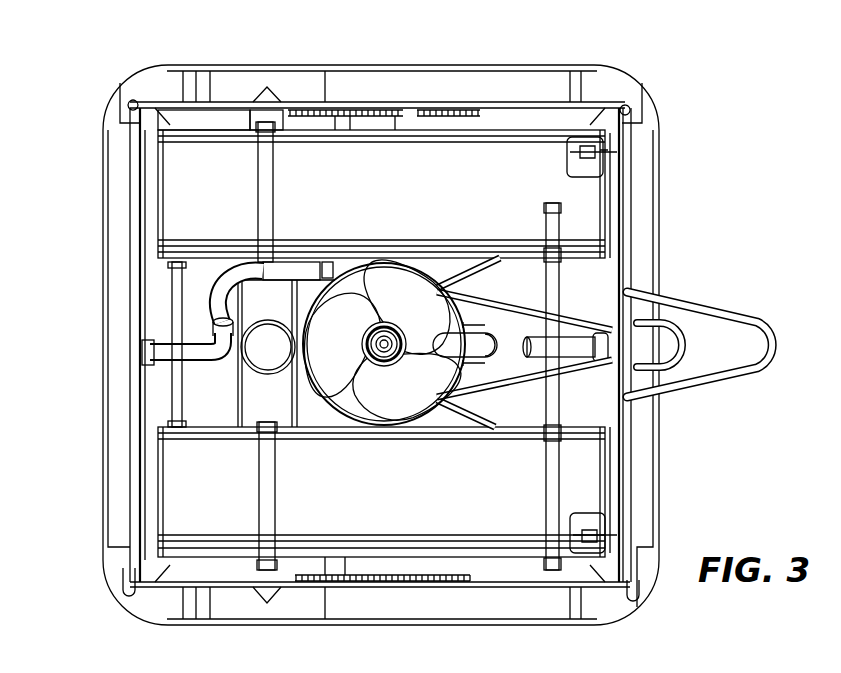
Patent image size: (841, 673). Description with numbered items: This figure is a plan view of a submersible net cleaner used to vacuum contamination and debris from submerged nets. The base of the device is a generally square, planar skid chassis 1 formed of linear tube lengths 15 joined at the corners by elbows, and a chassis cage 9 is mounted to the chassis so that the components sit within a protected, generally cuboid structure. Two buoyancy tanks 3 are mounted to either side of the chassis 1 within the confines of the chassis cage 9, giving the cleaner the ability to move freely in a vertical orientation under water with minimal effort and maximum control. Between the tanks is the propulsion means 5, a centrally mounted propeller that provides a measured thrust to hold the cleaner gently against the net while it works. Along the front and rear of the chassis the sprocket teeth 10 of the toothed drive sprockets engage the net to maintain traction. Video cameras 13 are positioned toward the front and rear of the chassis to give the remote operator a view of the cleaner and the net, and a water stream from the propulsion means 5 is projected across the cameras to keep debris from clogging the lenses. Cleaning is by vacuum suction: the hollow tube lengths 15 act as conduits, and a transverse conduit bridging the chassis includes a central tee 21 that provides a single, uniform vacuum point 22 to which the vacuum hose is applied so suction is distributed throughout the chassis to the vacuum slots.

The skid chassis 1 is at (683, 128).
The buoyancy means 3 is at (390, 204).
The propulsion means 5 is at (410, 305).
The chassis cage 9 is at (627, 446).
The sprocket teeth 10 is at (436, 116).
The video camera 13 is at (608, 347).
The linear tube lengths 15 is at (292, 66).
The central tee 21 is at (250, 397).
The vacuum point 22 is at (264, 353).